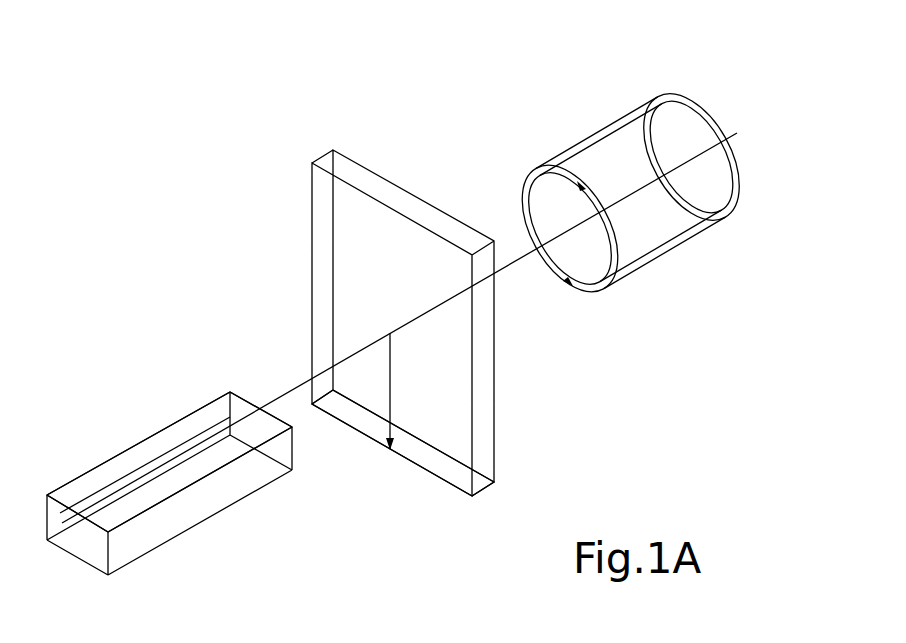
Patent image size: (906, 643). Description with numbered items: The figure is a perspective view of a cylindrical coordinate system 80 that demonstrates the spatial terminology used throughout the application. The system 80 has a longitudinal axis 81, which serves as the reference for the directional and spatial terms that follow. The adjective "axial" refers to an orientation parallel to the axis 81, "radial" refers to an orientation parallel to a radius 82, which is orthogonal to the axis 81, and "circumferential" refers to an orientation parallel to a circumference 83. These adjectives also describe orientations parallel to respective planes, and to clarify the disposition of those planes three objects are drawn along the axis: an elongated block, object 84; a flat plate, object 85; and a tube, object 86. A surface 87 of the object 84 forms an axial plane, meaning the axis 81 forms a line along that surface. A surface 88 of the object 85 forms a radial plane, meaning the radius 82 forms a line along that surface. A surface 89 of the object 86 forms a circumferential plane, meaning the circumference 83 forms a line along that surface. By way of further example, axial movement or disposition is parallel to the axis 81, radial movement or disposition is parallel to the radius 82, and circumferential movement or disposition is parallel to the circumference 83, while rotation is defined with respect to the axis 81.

The cylindrical coordinate system 80 is at (270, 206).
The longitudinal axis 81 is at (598, 195).
The radius 82 is at (390, 383).
The circumference 83 is at (522, 196).
The object 84 is at (133, 562).
The object 85 is at (503, 487).
The object 86 is at (657, 263).
The surface 87 is at (128, 465).
The surface 88 is at (327, 281).
The surface 89 is at (597, 134).